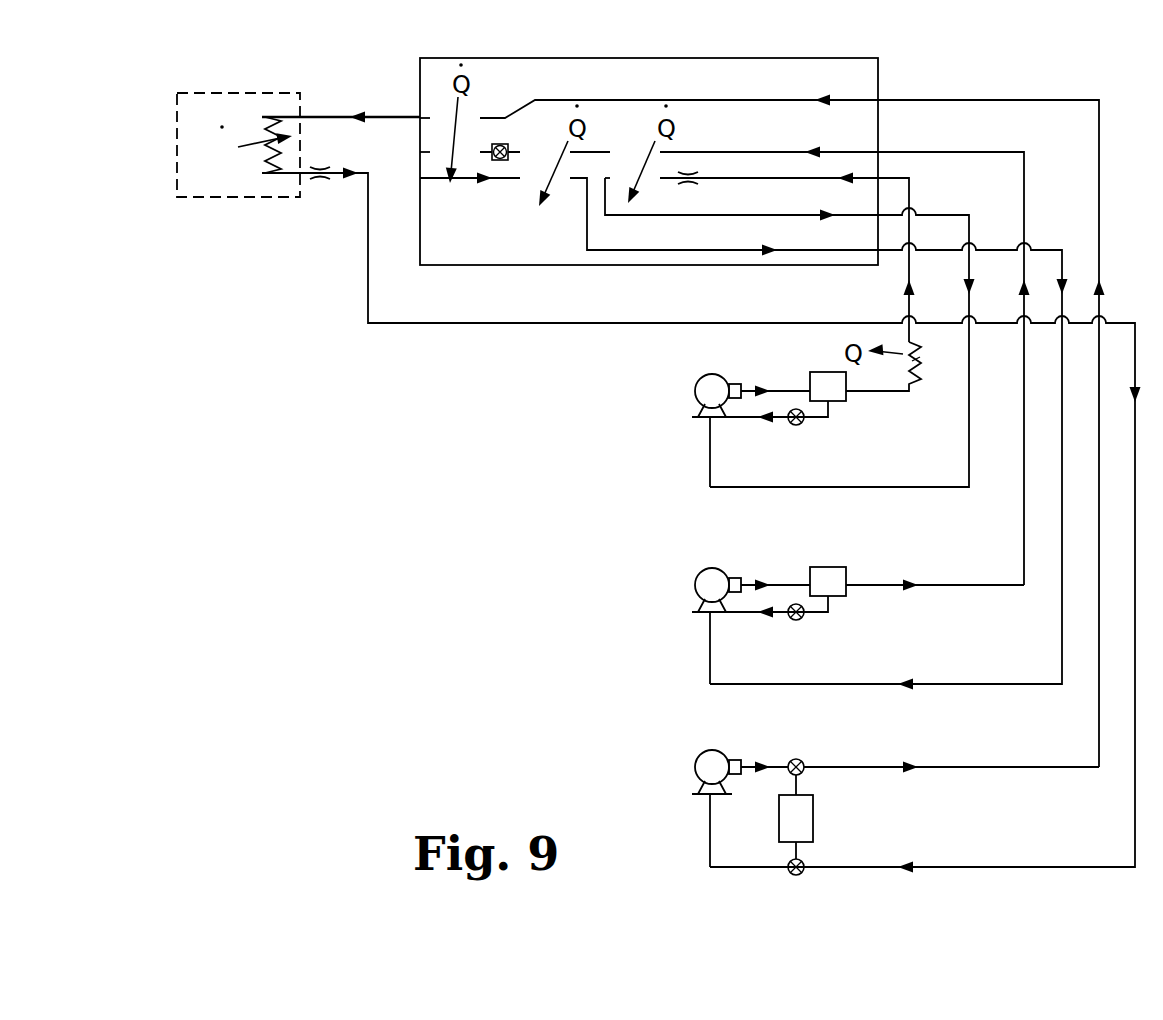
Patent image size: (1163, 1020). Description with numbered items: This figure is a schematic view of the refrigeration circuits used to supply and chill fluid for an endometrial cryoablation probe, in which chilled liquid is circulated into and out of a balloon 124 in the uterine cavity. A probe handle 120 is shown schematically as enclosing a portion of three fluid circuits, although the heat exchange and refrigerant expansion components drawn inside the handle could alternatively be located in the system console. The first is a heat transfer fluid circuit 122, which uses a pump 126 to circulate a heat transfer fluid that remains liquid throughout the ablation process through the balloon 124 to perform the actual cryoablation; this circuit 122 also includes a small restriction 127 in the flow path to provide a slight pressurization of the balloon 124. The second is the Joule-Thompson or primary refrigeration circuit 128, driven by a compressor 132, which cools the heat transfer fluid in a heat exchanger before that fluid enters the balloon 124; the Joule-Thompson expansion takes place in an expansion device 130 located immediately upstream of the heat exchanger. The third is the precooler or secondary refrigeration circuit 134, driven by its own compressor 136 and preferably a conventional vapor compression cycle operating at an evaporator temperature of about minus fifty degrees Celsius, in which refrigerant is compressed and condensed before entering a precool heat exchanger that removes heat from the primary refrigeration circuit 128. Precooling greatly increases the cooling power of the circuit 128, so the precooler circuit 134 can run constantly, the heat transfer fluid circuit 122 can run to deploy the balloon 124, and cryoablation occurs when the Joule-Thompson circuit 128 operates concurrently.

The probe handle 120 is at (758, 46).
The heat transfer fluid circuit 122 is at (835, 767).
The balloon 124 is at (283, 86).
The pump 126 is at (694, 768).
The restriction 127 is at (321, 190).
The primary refrigeration circuit 128 is at (860, 585).
The expansion device 130 is at (499, 143).
The compressor 132 is at (694, 587).
The secondary refrigeration circuit 134 is at (863, 391).
The compressor 136 is at (694, 392).